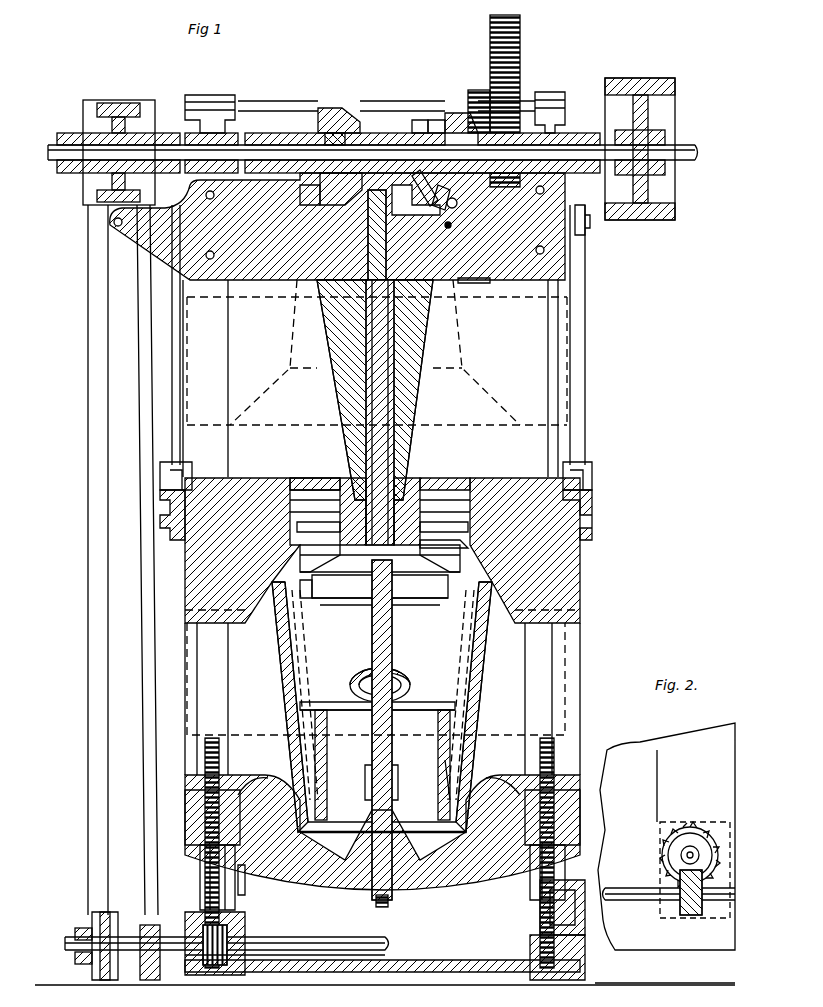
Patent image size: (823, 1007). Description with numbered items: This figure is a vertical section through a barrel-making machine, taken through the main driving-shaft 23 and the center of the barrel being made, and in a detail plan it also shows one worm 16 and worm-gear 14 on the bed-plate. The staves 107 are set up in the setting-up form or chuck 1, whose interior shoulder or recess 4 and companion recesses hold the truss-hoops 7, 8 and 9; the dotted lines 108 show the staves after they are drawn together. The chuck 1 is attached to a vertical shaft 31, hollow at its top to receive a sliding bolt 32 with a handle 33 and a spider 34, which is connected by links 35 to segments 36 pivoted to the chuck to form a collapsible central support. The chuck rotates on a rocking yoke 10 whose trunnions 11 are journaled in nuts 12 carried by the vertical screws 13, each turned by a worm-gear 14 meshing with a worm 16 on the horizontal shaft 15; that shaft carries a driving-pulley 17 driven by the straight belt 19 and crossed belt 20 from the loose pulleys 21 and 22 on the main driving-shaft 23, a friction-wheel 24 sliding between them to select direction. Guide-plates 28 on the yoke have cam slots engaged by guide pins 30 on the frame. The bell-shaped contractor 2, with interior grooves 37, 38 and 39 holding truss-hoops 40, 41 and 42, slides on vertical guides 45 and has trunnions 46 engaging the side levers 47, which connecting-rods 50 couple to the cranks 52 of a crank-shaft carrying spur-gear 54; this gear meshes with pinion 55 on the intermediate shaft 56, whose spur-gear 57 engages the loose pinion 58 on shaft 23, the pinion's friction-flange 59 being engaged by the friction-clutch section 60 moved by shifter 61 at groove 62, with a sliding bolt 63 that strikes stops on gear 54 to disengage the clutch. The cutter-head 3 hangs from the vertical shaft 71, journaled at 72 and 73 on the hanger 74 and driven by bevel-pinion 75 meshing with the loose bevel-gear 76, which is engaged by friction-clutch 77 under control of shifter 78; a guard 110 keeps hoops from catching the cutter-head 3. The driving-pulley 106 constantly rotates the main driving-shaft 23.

In FIG. 1, the setting-up form or chuck 1 is at (274, 778).
In FIG. 1, the bell-shaped contractor 2 is at (389, 550).
In FIG. 1, the cutter-head 3 is at (380, 608).
In FIG. 1, the shoulder or recess 4 is at (450, 775).
In FIG. 1, the truss-hoop 7 is at (474, 743).
In FIG. 1, the truss-hoop 8 is at (479, 785).
In FIG. 1, the truss-hoop 9 is at (479, 805).
In FIG. 1, the rocking yoke 10 is at (382, 846).
In FIG. 1, the trunnion 11 is at (379, 782).
In FIG. 1, the nut 12 is at (384, 817).
In FIG. 1, the vertical screw 13 is at (380, 844).
In FIG. 1, the worm-gear 14 is at (540, 925).
In FIG. 2, the worm-gear 14 is at (690, 854).
In FIG. 1, the horizontal shaft 15 is at (227, 932).
In FIG. 2, the horizontal shaft 15 is at (669, 883).
In FIG. 1, the worm 16 is at (385, 957).
In FIG. 2, the worm 16 is at (690, 918).
In FIG. 1, the driving-pulley 17 is at (117, 957).
In FIG. 1, the belt 19 is at (100, 560).
In FIG. 1, the belt 20 is at (149, 560).
In FIG. 1, the loose pulley 21 is at (113, 140).
In FIG. 1, the loose pulley 22 is at (119, 142).
In FIG. 1, the main driving-shaft 23 is at (48, 153).
In FIG. 1, the friction-wheel 24 is at (118, 103).
In FIG. 1, the guide-plate 28 is at (382, 877).
In FIG. 1, the guide pin or stud 30 is at (380, 883).
In FIG. 1, the vertical shaft 31 is at (372, 752).
In FIG. 1, the sliding bolt 32 is at (379, 685).
In FIG. 1, the handle 33 is at (380, 679).
In FIG. 1, the spider 34 is at (386, 762).
In FIG. 1, the link 35 is at (377, 697).
In FIG. 1, the segment 36 is at (377, 697).
In FIG. 1, the recess or groove 37 is at (315, 495).
In FIG. 1, the recess or groove 38 is at (318, 525).
In FIG. 1, the recess or groove 39 is at (297, 589).
In FIG. 1, the truss-hoop 40 is at (445, 484).
In FIG. 1, the truss-hoop 41 is at (444, 525).
In FIG. 1, the truss-hoop 42 is at (444, 548).
In FIG. 1, the vertical guide 45 is at (382, 699).
In FIG. 1, the trunnion 46 is at (162, 520).
In FIG. 1, the side lever 47 is at (380, 466).
In FIG. 1, the connecting-rod 50 is at (382, 335).
In FIG. 1, the crank 52 is at (577, 203).
In FIG. 1, the spur-gear 54 is at (375, 351).
In FIG. 1, the pinion 55 is at (478, 101).
In FIG. 1, the intermediate shaft 56 is at (386, 95).
In FIG. 1, the spur-gear 57 is at (505, 93).
In FIG. 1, the loose pinion 58 is at (543, 112).
In FIG. 1, the friction-flange 59 is at (448, 112).
In FIG. 1, the friction-clutch section 60 is at (435, 125).
In FIG. 1, the shifter 61 is at (437, 198).
In FIG. 1, the groove 62 is at (416, 125).
In FIG. 1, the sliding bolt 63 is at (436, 215).
In FIG. 1, the vertical shaft 71 is at (375, 398).
In FIG. 1, the journal 72 is at (378, 511).
In FIG. 1, the journal 73 is at (368, 244).
In FIG. 1, the hanger 74 is at (366, 390).
In FIG. 1, the bevel-pinion 75 is at (421, 192).
In FIG. 1, the loose bevel-gear 76 is at (358, 106).
In FIG. 1, the friction-clutch 77 is at (322, 129).
In FIG. 1, the shifter 78 is at (327, 189).
In FIG. 1, the driving-pulley 106 is at (640, 137).
In FIG. 1, the staves 107 is at (280, 660).
In FIG. 1, the dotted lines 108 is at (383, 695).
In FIG. 1, the guard 110 is at (380, 569).